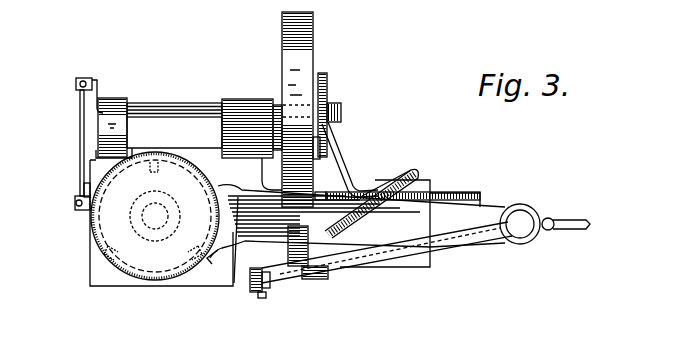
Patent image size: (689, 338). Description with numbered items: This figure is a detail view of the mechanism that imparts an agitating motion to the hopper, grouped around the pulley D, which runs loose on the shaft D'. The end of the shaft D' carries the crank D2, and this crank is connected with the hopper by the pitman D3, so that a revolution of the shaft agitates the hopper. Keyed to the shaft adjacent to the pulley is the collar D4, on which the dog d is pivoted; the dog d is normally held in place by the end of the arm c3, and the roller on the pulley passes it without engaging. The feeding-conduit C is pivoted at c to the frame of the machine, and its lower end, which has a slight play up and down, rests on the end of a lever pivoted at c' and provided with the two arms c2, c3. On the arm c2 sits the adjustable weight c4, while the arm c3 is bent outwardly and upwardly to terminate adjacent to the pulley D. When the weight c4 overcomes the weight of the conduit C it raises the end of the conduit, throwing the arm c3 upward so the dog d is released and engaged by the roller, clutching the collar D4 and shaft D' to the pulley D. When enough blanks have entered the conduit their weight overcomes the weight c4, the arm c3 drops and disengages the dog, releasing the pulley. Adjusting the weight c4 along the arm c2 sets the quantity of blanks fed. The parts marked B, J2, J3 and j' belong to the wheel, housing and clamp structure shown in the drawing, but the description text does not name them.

The crank D2 is at (96, 88).
The pitman D3 is at (81, 116).
The shaft D' is at (190, 120).
The pulley D is at (280, 109).
The collar D4 is at (328, 84).
The dog d is at (321, 156).
The arm c3 is at (341, 149).
The pivot c' is at (371, 191).
The adjustable weight c4 is at (318, 188).
The arm c2 is at (403, 188).
The housing J2 is at (404, 258).
The wheel B is at (155, 216).
The pivot c is at (215, 262).
The feeding-conduit C is at (234, 255).
The clamp j' is at (260, 296).
The clamp block J3 is at (308, 266).